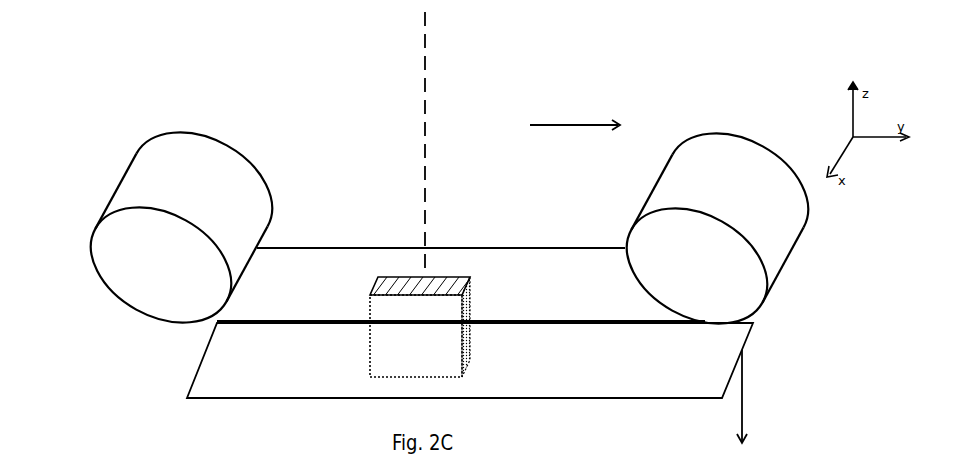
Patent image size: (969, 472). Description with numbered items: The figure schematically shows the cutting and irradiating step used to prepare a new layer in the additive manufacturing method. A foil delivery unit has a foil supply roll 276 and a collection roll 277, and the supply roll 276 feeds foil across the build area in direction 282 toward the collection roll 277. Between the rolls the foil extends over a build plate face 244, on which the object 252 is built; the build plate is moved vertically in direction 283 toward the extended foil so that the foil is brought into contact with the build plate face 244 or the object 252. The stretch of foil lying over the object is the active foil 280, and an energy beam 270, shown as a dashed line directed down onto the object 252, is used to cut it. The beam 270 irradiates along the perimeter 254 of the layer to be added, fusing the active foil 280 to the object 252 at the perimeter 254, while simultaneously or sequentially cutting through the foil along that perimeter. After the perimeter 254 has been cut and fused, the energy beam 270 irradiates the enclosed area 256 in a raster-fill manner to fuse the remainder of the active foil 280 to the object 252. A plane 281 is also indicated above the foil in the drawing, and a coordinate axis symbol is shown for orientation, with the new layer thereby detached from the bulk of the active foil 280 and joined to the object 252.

The build plate face 244 is at (650, 400).
The object 252 is at (414, 324).
The perimeter 254 is at (372, 290).
The area 256 is at (449, 288).
The energy beam 270 is at (424, 66).
The foil supply roll 276 is at (100, 207).
The collection roll 277 is at (800, 245).
The active foil 280 is at (535, 325).
The plane 281 is at (352, 176).
The direction 282 is at (590, 122).
The direction 283 is at (746, 402).